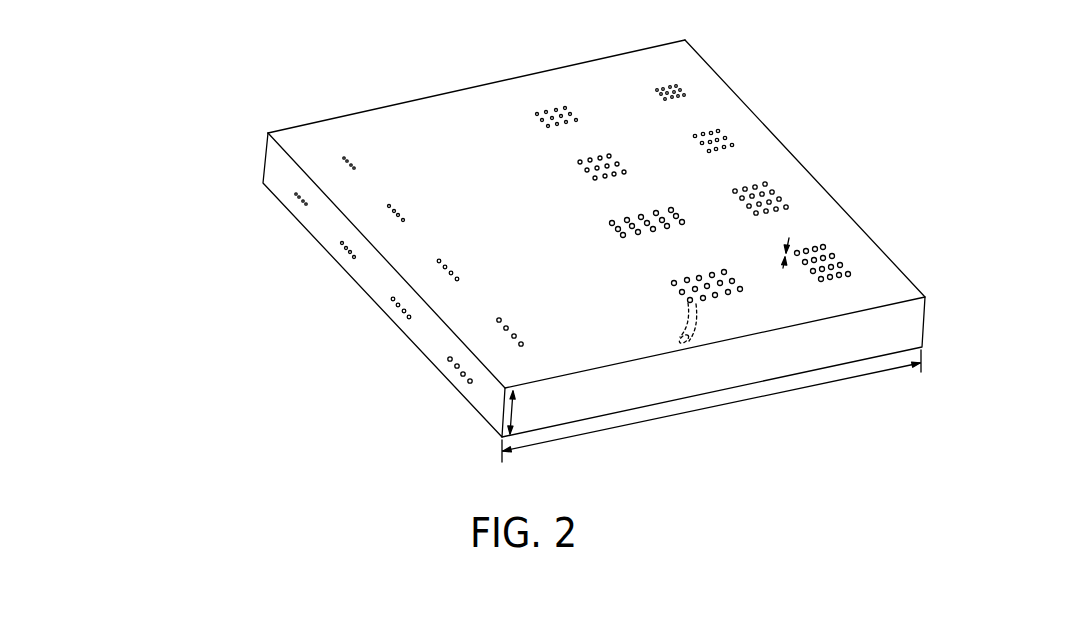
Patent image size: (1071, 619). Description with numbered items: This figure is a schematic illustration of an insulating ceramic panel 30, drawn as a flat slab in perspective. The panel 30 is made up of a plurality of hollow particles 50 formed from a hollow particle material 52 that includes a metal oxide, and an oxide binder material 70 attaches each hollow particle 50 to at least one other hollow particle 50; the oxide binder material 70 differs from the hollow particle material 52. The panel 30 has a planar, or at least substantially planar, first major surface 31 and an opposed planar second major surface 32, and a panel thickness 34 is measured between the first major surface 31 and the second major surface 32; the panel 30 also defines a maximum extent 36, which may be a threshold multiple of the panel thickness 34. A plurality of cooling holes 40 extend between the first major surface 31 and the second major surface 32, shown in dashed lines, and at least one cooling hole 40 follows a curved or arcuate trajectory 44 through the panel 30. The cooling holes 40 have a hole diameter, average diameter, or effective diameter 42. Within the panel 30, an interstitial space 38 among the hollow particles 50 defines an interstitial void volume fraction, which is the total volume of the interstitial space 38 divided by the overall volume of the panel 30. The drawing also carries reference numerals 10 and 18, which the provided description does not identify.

The perforated plate assembly 10 is at (144, 147).
The panel 18 is at (154, 193).
The insulating ceramic panel 30 is at (177, 247).
The first major surface 31 is at (400, 133).
The second major surface 32 is at (427, 360).
The panel thickness 34 is at (517, 416).
The maximum extent 36 is at (712, 407).
The interstitial space 38 is at (856, 248).
The cooling hole 40 is at (626, 233).
The hole diameter 42 is at (782, 271).
The curved trajectory 44 is at (689, 318).
The hollow particle 50 is at (498, 105).
The hollow particle material 52 is at (572, 85).
The oxide binder material 70 is at (600, 78).